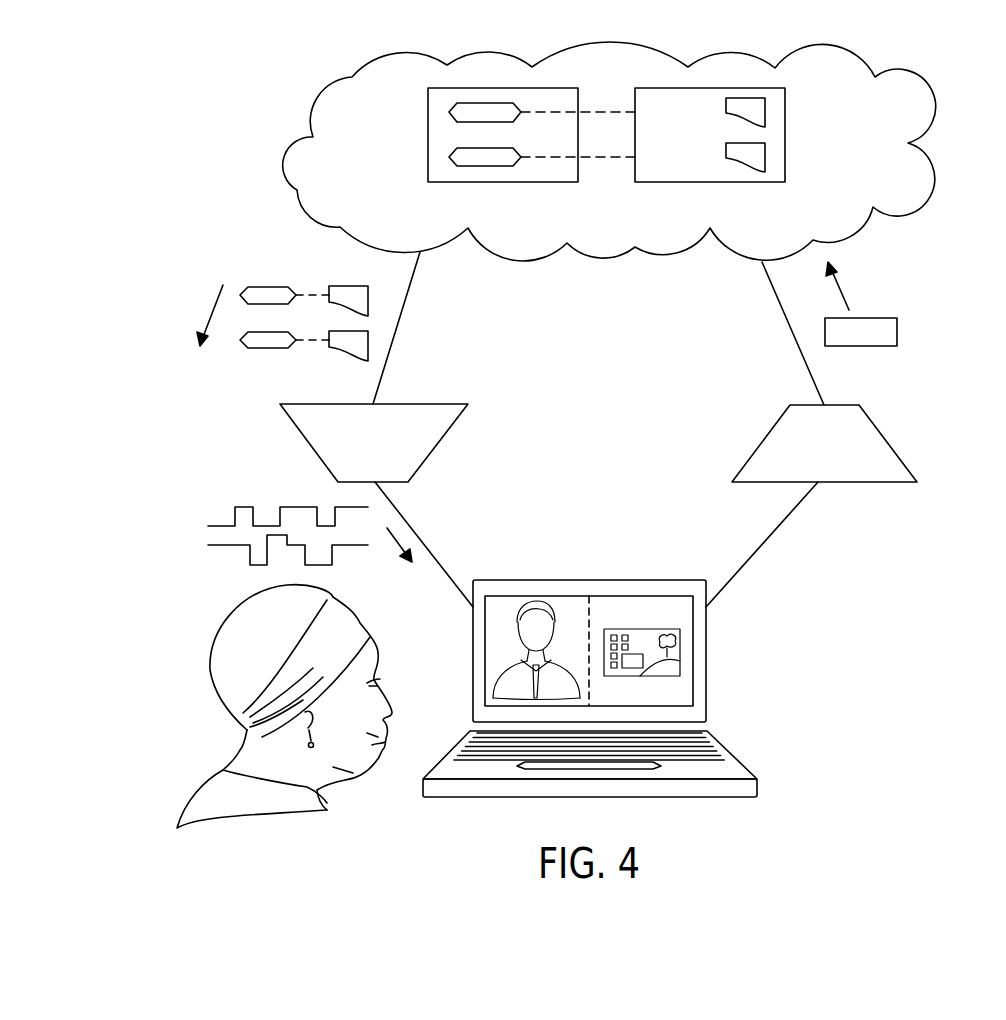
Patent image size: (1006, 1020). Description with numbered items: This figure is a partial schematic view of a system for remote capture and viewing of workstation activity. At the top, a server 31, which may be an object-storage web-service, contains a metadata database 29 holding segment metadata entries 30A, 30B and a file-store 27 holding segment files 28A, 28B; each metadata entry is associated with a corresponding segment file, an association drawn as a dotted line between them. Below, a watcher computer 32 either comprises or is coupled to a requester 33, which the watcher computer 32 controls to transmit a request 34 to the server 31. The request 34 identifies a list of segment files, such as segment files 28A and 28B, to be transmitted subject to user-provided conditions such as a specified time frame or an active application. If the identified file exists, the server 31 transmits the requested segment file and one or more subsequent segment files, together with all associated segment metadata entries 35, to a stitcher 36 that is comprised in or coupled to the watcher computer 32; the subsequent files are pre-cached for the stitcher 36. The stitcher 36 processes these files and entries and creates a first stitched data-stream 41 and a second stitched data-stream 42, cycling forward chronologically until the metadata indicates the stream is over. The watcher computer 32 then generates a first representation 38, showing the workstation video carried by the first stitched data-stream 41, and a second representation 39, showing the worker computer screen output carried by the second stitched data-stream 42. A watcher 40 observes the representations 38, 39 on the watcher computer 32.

The file-store 27 is at (785, 165).
The segment file 28A is at (765, 112).
The segment file 28B is at (765, 157).
The metadata database 29 is at (428, 174).
The segment metadata entry 30A is at (449, 112).
The segment metadata entry 30B is at (449, 157).
The server 31 is at (938, 113).
The watcher computer 32 is at (740, 763).
The requester 33 is at (890, 446).
The request 34 is at (897, 330).
The segment metadata entries 35 is at (270, 289).
The stitcher 36 is at (308, 443).
The first representation 38 is at (565, 610).
The second representation 39 is at (650, 610).
The watcher 40 is at (245, 746).
The first stitched data-stream 41 is at (235, 513).
The second stitched data-stream 42 is at (288, 550).